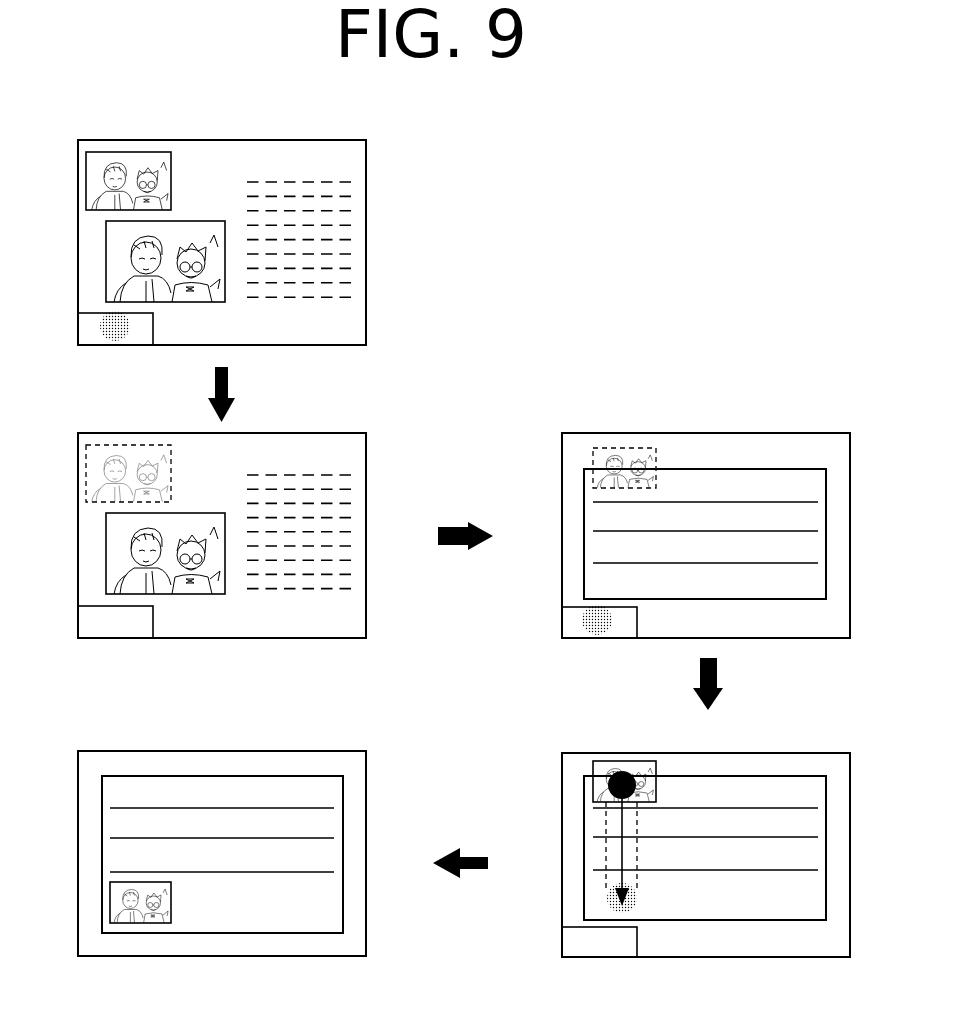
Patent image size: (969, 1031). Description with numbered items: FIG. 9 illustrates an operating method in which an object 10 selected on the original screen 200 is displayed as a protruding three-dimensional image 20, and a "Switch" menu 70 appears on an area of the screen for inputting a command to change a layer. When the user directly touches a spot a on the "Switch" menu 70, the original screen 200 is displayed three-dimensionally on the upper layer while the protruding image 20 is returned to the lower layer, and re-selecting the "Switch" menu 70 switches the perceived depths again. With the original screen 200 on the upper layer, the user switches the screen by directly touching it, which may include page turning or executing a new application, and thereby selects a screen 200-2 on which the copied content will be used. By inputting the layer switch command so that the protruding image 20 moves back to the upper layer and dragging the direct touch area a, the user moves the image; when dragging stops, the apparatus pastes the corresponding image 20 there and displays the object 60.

The original screen 200 is at (312, 140).
The screen on which the copied content will be used 200-2 is at (798, 433).
The 3D image 20 is at (86, 191).
The object 10 is at (106, 258).
The Switch menu 70 is at (147, 345).
The direct touch spot a is at (100, 318).
The pasted object 60 is at (110, 899).